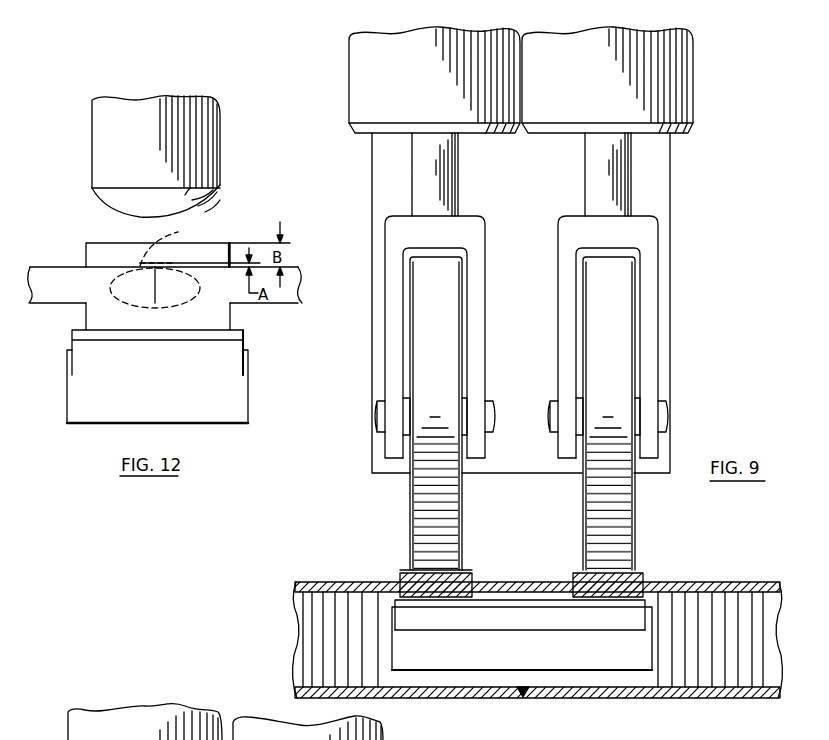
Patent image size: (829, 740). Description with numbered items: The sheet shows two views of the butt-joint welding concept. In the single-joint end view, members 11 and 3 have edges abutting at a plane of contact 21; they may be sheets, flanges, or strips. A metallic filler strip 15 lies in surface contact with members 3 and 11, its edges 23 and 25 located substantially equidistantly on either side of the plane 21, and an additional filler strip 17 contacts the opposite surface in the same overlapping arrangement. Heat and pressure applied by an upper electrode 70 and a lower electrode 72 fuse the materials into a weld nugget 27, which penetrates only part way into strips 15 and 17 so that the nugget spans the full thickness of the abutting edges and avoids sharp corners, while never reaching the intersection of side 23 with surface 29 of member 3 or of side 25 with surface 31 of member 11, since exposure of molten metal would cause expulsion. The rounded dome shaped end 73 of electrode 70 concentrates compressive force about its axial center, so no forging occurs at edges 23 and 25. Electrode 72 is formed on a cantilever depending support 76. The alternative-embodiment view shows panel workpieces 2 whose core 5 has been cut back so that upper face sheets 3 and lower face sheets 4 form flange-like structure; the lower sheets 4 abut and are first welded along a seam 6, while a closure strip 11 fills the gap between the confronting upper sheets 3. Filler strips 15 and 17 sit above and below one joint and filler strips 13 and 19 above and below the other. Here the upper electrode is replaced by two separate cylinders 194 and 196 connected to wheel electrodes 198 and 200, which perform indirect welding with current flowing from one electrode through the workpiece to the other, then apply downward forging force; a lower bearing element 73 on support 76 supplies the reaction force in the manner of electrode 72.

In FIG. 9, the workpiece 2 is at (724, 578).
In FIG. 12, the upper face sheet 3 is at (48, 295).
In FIG. 9, the upper face sheet 3 is at (352, 582).
In FIG. 9, the lower face sheet 4 is at (765, 692).
In FIG. 9, the core 5 is at (300, 628).
In FIG. 9, the seam 6 is at (530, 689).
In FIG. 12, the closure strip 11 is at (290, 300).
In FIG. 9, the filler strip 13 is at (636, 576).
In FIG. 12, the filler strip 15 is at (105, 243).
In FIG. 9, the filler strip 15 is at (463, 576).
In FIG. 12, the filler strip 17 is at (93, 320).
In FIG. 9, the filler strip 17 is at (451, 602).
In FIG. 9, the filler strip 19 is at (597, 601).
In FIG. 12, the plane of abutting contact 21 is at (160, 290).
In FIG. 12, the edge of filler strip 23 is at (85, 253).
In FIG. 12, the edge of filler strip 25 is at (233, 245).
In FIG. 12, the weld nugget 27 is at (172, 238).
In FIG. 12, the surface of member 29 is at (44, 267).
In FIG. 12, the surface of member 31 is at (290, 268).
In FIG. 12, the upper electrode 70 is at (207, 148).
In FIG. 12, the lower electrode 72 is at (232, 351).
In FIG. 9, the lower electrode 72 is at (545, 624).
In FIG. 12, the dome shaped end 73 is at (214, 196).
In FIG. 12, the depending support 76 is at (67, 400).
In FIG. 9, the cylinder 194 is at (360, 70).
In FIG. 9, the cylinder 196 is at (672, 70).
In FIG. 9, the wheel electrode 198 is at (408, 525).
In FIG. 9, the wheel electrode 200 is at (583, 513).